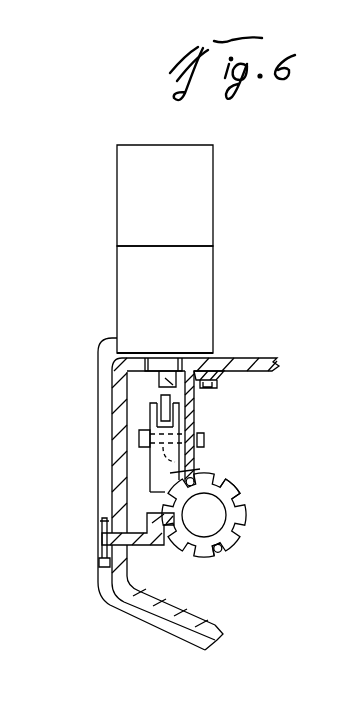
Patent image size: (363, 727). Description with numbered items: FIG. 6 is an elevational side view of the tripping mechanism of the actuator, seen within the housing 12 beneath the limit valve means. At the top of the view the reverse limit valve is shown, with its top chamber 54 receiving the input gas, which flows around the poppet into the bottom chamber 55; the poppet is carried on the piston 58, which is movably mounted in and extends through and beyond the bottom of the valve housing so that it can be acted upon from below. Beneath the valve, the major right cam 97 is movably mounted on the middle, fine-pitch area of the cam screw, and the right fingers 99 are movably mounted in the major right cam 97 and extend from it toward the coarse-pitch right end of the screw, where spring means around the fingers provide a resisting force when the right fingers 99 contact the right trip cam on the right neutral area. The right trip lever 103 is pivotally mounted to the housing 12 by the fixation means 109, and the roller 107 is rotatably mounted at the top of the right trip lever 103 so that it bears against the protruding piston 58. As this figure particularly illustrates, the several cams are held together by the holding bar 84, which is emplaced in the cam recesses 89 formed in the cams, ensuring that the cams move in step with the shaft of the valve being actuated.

The housing 12 is at (128, 617).
The top chamber 54 is at (193, 198).
The bottom chamber 55 is at (185, 278).
The piston 58 is at (195, 396).
The holding bar 84 is at (142, 548).
The cam recesses 89 is at (217, 483).
The major right cam 97 is at (247, 522).
The right fingers 99 is at (228, 481).
The right trip lever 103 is at (172, 472).
The roller 107 is at (175, 390).
The fixation means 109 is at (162, 455).